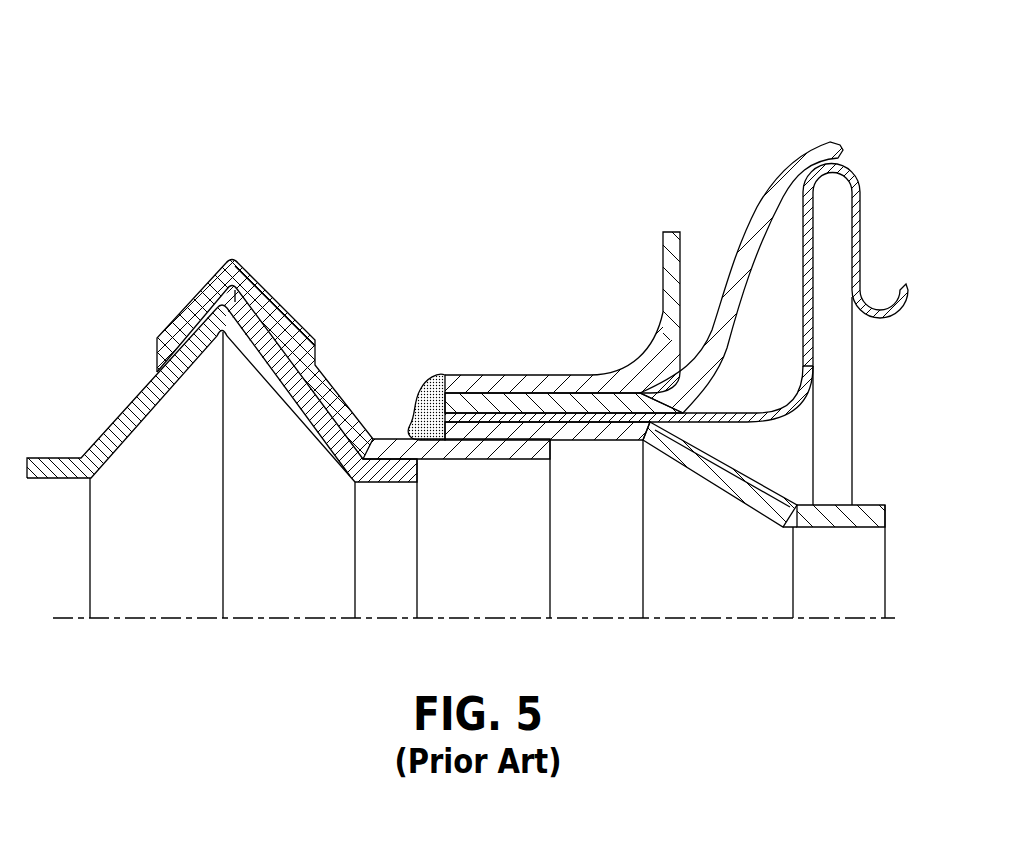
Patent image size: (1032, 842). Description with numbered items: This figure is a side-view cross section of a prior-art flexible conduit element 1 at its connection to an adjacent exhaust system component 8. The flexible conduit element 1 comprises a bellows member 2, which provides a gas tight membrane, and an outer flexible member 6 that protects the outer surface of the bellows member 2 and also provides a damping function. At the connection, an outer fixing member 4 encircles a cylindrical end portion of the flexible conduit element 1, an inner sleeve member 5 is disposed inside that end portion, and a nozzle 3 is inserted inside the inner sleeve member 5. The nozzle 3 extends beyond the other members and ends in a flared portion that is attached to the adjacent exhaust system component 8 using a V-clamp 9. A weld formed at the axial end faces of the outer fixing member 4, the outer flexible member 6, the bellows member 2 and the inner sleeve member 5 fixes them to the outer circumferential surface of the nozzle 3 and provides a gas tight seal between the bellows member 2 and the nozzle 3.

The flexible conduit element 1 is at (587, 201).
The bellows member 2 is at (861, 197).
The nozzle 3 is at (337, 391).
The outer fixing member 4 is at (672, 230).
The inner sleeve member 5 is at (872, 505).
The outer flexible member 6 is at (832, 142).
The adjacent exhaust system component 8 is at (143, 383).
The V-clamp 9 is at (262, 280).